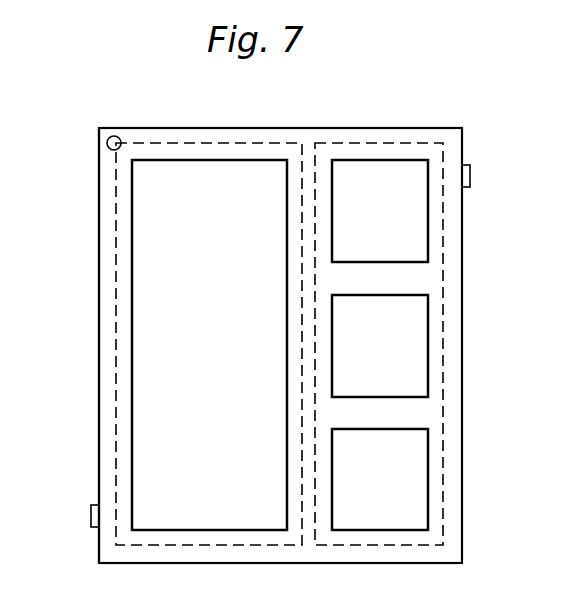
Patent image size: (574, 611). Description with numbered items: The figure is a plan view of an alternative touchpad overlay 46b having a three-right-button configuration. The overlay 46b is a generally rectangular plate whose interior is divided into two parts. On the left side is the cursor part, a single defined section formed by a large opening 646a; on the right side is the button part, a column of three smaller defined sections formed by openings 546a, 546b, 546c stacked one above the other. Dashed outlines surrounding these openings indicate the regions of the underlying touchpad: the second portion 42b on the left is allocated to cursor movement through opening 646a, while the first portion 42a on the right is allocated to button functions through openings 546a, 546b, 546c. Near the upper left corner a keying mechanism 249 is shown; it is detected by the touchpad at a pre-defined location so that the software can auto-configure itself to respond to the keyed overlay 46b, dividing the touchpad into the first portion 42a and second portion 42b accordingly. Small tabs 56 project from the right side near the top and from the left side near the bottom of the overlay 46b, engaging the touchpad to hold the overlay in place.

The keying mechanism 249 is at (113, 136).
The second portion 42b is at (198, 141).
The first portion 42a is at (378, 141).
The opening 646a is at (130, 430).
The opening 546a is at (427, 228).
The opening 546b is at (427, 331).
The opening 546c is at (427, 473).
The hinge tab 56 is at (470, 176).
The overlay 46b is at (99, 347).